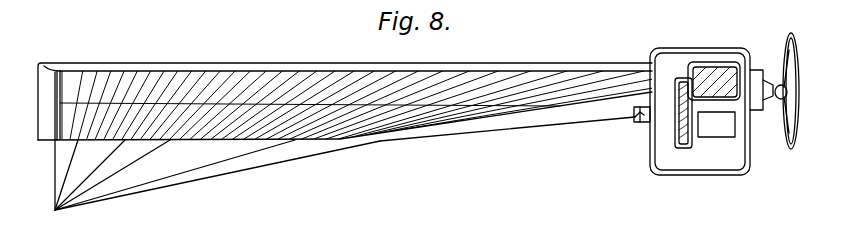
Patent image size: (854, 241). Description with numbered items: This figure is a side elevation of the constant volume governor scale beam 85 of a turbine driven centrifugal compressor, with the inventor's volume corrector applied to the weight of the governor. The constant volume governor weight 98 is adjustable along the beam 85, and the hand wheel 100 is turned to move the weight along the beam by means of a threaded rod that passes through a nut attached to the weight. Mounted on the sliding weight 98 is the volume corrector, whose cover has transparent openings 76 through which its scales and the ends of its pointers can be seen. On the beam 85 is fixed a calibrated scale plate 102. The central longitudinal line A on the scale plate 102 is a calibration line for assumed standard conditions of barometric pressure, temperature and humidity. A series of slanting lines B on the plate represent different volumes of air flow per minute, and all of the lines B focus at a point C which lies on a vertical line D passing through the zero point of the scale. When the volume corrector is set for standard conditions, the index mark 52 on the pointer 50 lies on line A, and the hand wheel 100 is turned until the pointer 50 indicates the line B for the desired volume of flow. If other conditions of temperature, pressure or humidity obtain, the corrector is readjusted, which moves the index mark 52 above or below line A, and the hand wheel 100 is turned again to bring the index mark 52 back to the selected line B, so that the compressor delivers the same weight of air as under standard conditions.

The beam 85 is at (348, 68).
The scale plate 102 is at (550, 127).
The index mark 52 is at (640, 121).
The pointer 50 is at (647, 123).
The constant volume governor weight 98 is at (702, 176).
The transparent openings 76 is at (690, 70).
The hand wheel 100 is at (789, 148).
The central longitudinal line A is at (500, 107).
The slanting lines B is at (258, 76).
The point C is at (210, 180).
The vertical line D is at (55, 165).